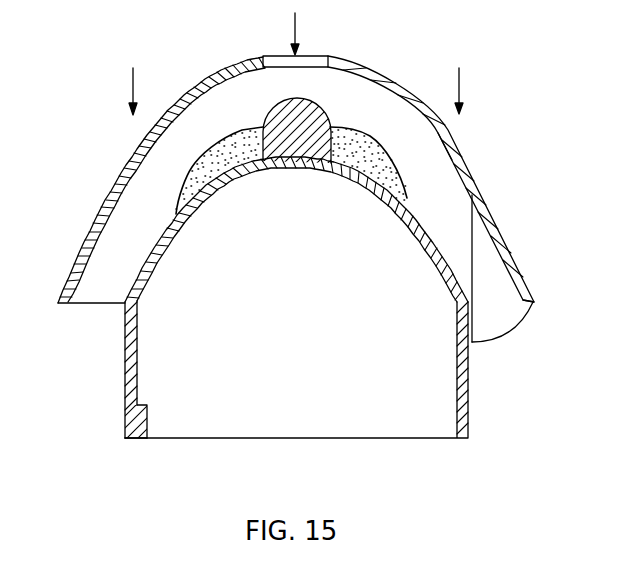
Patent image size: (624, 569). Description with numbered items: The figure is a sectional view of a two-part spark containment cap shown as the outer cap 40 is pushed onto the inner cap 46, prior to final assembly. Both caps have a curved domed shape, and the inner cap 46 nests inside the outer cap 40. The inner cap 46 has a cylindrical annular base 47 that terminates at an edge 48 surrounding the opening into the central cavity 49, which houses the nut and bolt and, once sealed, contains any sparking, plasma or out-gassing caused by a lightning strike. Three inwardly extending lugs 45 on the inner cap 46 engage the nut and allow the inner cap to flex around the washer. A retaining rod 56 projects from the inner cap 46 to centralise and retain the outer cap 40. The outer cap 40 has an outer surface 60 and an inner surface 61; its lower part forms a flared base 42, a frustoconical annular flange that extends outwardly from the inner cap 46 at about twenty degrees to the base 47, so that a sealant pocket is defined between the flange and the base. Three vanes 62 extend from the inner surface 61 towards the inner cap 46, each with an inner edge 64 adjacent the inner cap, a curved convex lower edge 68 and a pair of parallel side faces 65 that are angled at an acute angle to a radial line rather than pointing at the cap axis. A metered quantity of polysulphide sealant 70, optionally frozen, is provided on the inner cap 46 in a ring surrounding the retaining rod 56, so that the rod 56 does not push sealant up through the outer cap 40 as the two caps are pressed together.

The outer cap 40 is at (198, 82).
The flared base 42 is at (507, 237).
The lugs 45 is at (147, 418).
The inner cap 46 is at (228, 170).
The cylindrical annular base 47 is at (125, 375).
The edge 48 is at (126, 440).
The central cavity 49 is at (305, 302).
The retaining rod 56 is at (333, 135).
The outer surface 60 is at (128, 172).
The inner surface 61 is at (450, 160).
The vanes 62 is at (518, 342).
The inner edge 64 is at (468, 265).
The side faces 65 is at (500, 327).
The curved convex lower edge 68 is at (530, 308).
The polysulphide sealant 70 is at (238, 128).